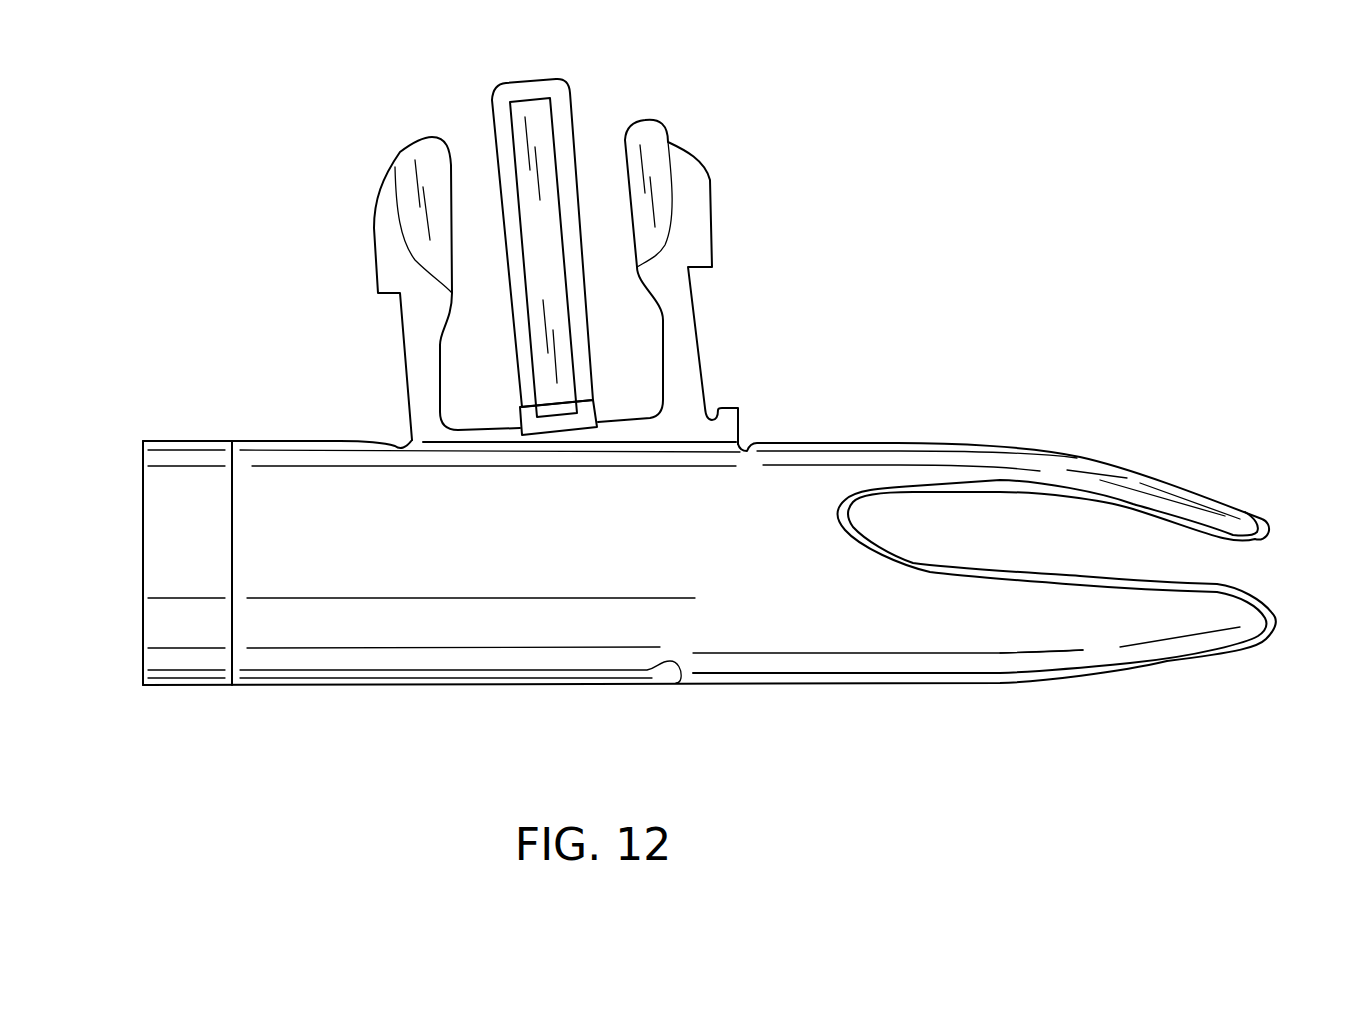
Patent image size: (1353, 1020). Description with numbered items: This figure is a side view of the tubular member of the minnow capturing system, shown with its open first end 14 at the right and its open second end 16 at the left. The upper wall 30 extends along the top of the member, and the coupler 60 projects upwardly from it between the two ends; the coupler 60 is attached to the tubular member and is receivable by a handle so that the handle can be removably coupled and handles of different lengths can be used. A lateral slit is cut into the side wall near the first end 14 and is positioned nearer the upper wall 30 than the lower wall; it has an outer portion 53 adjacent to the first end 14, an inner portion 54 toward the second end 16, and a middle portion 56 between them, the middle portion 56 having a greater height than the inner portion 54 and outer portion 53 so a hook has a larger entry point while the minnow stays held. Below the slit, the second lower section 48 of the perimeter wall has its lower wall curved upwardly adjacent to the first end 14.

The first end 14 is at (1273, 613).
The second end 16 is at (143, 642).
The upper wall 30 is at (1245, 511).
The second lower section 48 is at (1157, 655).
The outer portion 53 is at (1198, 543).
The inner portion 54 is at (885, 507).
The middle portion 56 is at (1017, 525).
The coupler 60 is at (697, 160).